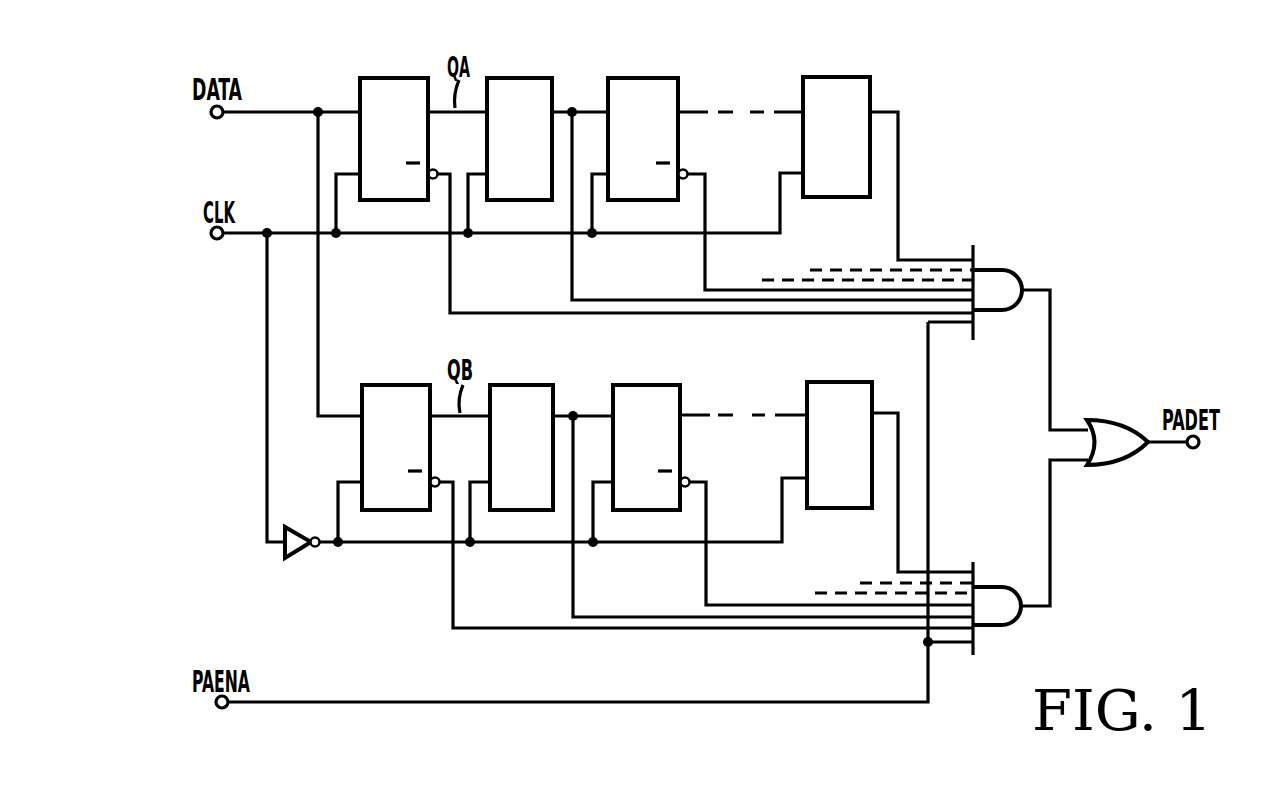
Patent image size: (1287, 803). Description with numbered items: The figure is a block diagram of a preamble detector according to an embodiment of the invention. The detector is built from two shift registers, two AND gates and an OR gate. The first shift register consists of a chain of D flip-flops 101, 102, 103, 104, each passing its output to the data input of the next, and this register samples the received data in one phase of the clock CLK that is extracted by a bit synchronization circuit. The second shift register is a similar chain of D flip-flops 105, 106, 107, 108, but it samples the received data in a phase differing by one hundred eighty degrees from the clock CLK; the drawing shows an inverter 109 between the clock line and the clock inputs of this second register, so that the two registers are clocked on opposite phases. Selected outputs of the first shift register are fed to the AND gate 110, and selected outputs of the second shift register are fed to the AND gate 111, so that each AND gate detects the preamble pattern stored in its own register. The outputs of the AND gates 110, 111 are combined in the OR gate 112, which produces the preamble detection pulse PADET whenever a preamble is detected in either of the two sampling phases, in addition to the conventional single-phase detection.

The D flip-flop 101 is at (375, 78).
The D flip-flop 102 is at (527, 78).
The D flip-flop 103 is at (657, 78).
The D flip-flop 104 is at (850, 76).
The D flip-flop 105 is at (380, 384).
The D flip-flop 106 is at (534, 384).
The D flip-flop 107 is at (660, 384).
The D flip-flop 108 is at (852, 382).
The inverter 109 is at (299, 560).
The AND gate 110 is at (1000, 270).
The AND gate 111 is at (1000, 587).
The OR gate 112 is at (1107, 418).